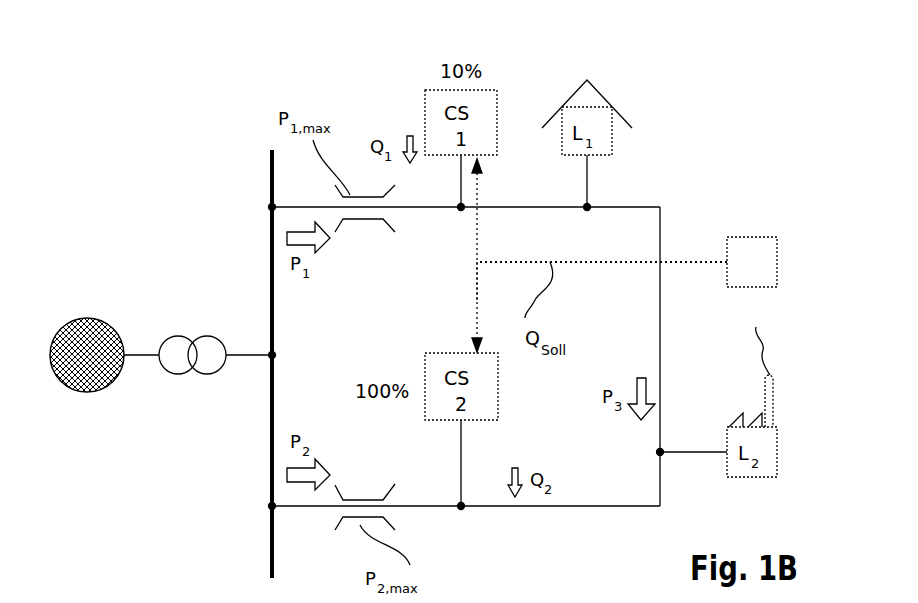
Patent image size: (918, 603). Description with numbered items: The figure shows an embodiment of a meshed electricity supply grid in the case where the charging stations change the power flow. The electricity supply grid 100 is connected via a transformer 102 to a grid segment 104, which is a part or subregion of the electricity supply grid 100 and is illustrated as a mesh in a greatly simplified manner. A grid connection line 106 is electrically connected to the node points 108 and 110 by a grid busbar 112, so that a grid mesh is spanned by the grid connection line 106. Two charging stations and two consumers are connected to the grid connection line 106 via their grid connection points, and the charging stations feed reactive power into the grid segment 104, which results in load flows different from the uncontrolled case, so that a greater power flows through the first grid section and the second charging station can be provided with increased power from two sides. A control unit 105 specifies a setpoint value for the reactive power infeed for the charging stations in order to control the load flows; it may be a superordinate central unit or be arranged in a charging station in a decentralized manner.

The electricity supply grid 100 is at (90, 318).
The transformer 102 is at (193, 337).
The grid segment 104 is at (662, 99).
The control unit 105 is at (747, 237).
The grid connection line 106 is at (660, 207).
The node point 108 is at (272, 207).
The node point 110 is at (272, 506).
The grid busbar 112 is at (272, 165).